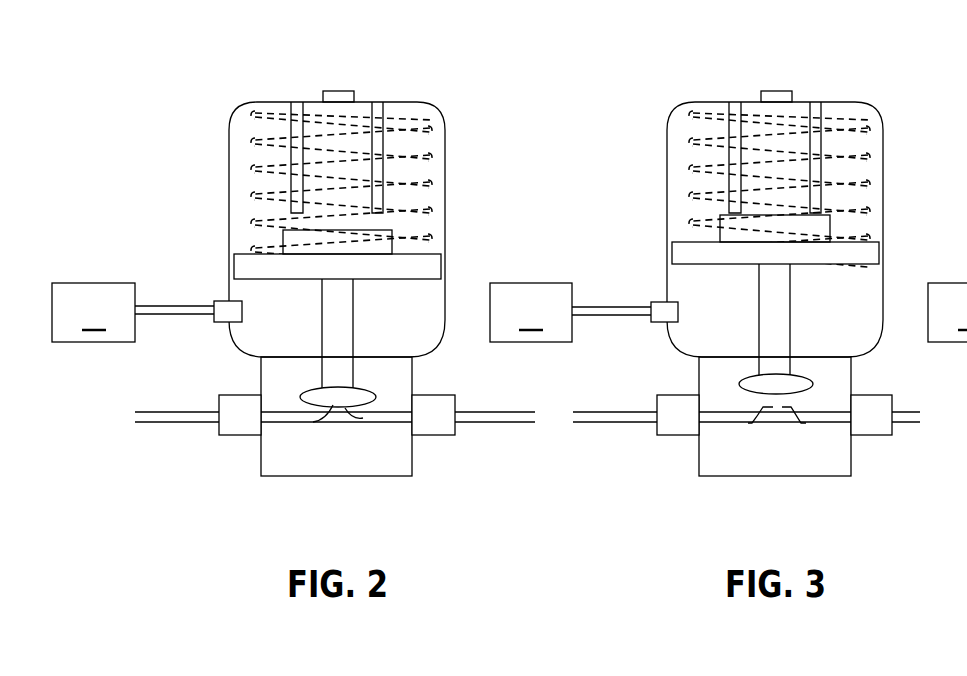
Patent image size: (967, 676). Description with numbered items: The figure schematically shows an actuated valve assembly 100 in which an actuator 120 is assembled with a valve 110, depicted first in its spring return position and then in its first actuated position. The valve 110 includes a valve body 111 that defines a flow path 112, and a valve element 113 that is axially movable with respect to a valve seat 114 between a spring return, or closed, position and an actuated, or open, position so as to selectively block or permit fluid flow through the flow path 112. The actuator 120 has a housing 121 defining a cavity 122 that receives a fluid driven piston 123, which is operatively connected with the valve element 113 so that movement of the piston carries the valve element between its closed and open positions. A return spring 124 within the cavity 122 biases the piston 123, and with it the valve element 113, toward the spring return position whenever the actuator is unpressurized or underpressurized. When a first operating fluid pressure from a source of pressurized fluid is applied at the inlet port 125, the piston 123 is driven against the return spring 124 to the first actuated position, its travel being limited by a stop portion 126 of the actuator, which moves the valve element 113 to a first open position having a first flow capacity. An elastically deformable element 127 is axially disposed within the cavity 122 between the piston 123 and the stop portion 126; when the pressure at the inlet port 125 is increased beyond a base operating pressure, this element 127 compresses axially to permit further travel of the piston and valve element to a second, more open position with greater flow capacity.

In FIG. 2, the actuated valve assembly 100 is at (118, 253).
In FIG. 3, the actuated valve assembly 100 is at (624, 243).
In FIG. 2, the valve 110 is at (412, 506).
In FIG. 3, the valve 110 is at (892, 468).
In FIG. 2, the valve body 111 is at (281, 468).
In FIG. 3, the valve body 111 is at (740, 476).
In FIG. 2, the flow path 112 is at (290, 417).
In FIG. 3, the flow path 112 is at (725, 423).
In FIG. 2, the valve element 113 is at (310, 398).
In FIG. 3, the valve element 113 is at (800, 382).
In FIG. 2, the valve seat 114 is at (335, 403).
In FIG. 3, the valve seat 114 is at (780, 400).
In FIG. 2, the actuator 120 is at (492, 165).
In FIG. 3, the actuator 120 is at (926, 180).
In FIG. 2, the housing 121 is at (393, 102).
In FIG. 3, the housing 121 is at (832, 102).
In FIG. 2, the cavity 122 is at (243, 192).
In FIG. 3, the cavity 122 is at (868, 295).
In FIG. 2, the fluid driven piston 123 is at (428, 270).
In FIG. 3, the fluid driven piston 123 is at (857, 255).
In FIG. 2, the return spring 124 is at (246, 143).
In FIG. 3, the return spring 124 is at (687, 145).
In FIG. 2, the inlet port 125 is at (221, 301).
In FIG. 3, the inlet port 125 is at (662, 302).
In FIG. 2, the stop portion 126 is at (380, 212).
In FIG. 3, the stop portion 126 is at (832, 230).
In FIG. 2, the elastically deformable element 127 is at (383, 241).
In FIG. 3, the elastically deformable element 127 is at (827, 231).